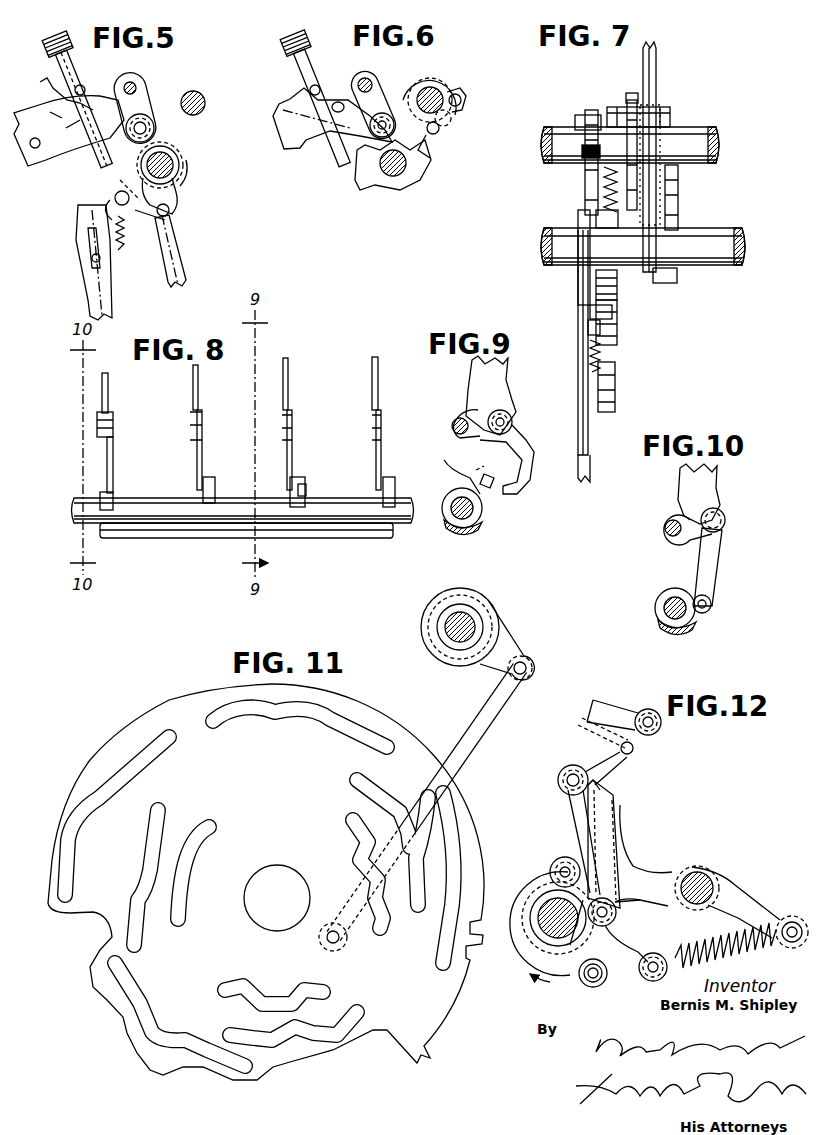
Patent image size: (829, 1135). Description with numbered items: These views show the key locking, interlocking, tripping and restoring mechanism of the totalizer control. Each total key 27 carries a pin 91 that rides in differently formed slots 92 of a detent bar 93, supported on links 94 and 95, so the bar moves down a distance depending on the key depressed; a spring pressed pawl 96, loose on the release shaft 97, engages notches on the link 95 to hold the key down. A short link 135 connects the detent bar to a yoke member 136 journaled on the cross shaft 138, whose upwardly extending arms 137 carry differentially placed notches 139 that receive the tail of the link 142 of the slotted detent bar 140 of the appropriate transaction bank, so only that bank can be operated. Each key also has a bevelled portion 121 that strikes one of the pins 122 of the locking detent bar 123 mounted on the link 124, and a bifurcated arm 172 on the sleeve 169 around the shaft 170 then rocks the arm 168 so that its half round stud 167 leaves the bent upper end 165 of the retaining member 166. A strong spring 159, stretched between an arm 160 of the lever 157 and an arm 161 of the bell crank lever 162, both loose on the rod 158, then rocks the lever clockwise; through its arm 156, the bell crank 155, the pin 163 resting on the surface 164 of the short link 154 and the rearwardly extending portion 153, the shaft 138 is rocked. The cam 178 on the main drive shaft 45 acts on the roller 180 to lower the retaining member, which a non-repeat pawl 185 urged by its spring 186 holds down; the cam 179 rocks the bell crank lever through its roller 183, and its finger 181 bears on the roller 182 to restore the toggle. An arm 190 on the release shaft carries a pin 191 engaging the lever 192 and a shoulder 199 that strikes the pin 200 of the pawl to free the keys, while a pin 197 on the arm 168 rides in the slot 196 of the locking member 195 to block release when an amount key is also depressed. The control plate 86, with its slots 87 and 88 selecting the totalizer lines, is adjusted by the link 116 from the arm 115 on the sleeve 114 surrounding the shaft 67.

In FIG. 5, the total key 27 is at (50, 50).
In FIG. 6, the total key 27 is at (286, 52).
In FIG. 7, the total key 27 is at (656, 92).
In FIG. 12, the main drive shaft 45 is at (548, 912).
In FIG. 11, the shaft 67 is at (472, 624).
In FIG. 11, the control plate 86 is at (450, 1010).
In FIG. 11, the slots 87 is at (226, 828).
In FIG. 11, the slots 88 is at (160, 812).
In FIG. 5, the pin 91 is at (85, 88).
In FIG. 6, the pin 91 is at (317, 85).
In FIG. 6, the slots 92 is at (340, 102).
In FIG. 6, the detent bar 93 is at (300, 146).
In FIG. 8, the detent bar 93 is at (108, 392).
In FIG. 10, the detent bar 93 is at (705, 490).
In FIG. 8, the link 94 is at (97, 436).
In FIG. 10, the link 94 is at (662, 528).
In FIG. 6, the link 95 is at (385, 96).
In FIG. 7, the link 95 is at (632, 100).
In FIG. 6, the spring pressed pawl 96 is at (461, 100).
In FIG. 7, the spring pressed pawl 96 is at (628, 110).
In FIG. 5, the release shaft 97 is at (205, 103).
In FIG. 6, the release shaft 97 is at (436, 92).
In FIG. 7, the release shaft 97 is at (700, 140).
In FIG. 11, the sleeve 114 is at (484, 626).
In FIG. 11, the arm 115 is at (500, 656).
In FIG. 11, the link 116 is at (480, 734).
In FIG. 5, the bevelled portion 121 is at (46, 84).
In FIG. 5, the pins 122 is at (36, 148).
In FIG. 5, the locking detent bar 123 is at (46, 126).
In FIG. 5, the link 124 is at (138, 100).
In FIG. 7, the link 124 is at (664, 118).
In FIG. 8, the short link 135 is at (113, 458).
In FIG. 10, the short link 135 is at (714, 556).
In FIG. 8, the yoke member 136 is at (148, 540).
In FIG. 9, the yoke member 136 is at (486, 530).
In FIG. 10, the yoke member 136 is at (694, 628).
In FIG. 8, the arm 137 is at (212, 480).
In FIG. 9, the arm 137 is at (450, 468).
In FIG. 8, the cross shaft 138 is at (128, 500).
In FIG. 9, the cross shaft 138 is at (474, 508).
In FIG. 10, the cross shaft 138 is at (664, 608).
In FIG. 8, the notches 139 is at (306, 488).
In FIG. 9, the notches 139 is at (488, 476).
In FIG. 8, the slotted detent bar 140 is at (198, 396).
In FIG. 9, the slotted detent bar 140 is at (482, 392).
In FIG. 8, the link 142 is at (202, 448).
In FIG. 9, the link 142 is at (512, 444).
In FIG. 12, the rearwardly extending portion 153 is at (615, 710).
In FIG. 12, the short link 154 is at (602, 728).
In FIG. 12, the bell crank 155 is at (577, 817).
In FIG. 12, the arm 156 is at (648, 975).
In FIG. 12, the lever 157 is at (698, 875).
In FIG. 12, the rod 158 is at (717, 877).
In FIG. 12, the strong spring 159 is at (758, 952).
In FIG. 12, the arm 160 is at (743, 915).
In FIG. 12, the arm 161 is at (673, 948).
In FIG. 12, the bell crank lever 162 is at (642, 878).
In FIG. 12, the pin 163 is at (633, 748).
In FIG. 12, the surface 164 is at (657, 740).
In FIG. 7, the bent upper end 165 is at (590, 328).
In FIG. 5, the retaining member 166 is at (175, 266).
In FIG. 7, the retaining member 166 is at (586, 446).
In FIG. 12, the retaining member 166 is at (608, 825).
In FIG. 5, the half round stud 167 is at (170, 211).
In FIG. 7, the half round stud 167 is at (592, 312).
In FIG. 5, the arm 168 is at (160, 196).
In FIG. 7, the arm 168 is at (615, 324).
In FIG. 7, the sleeve 169 is at (660, 284).
In FIG. 5, the shaft 170 is at (173, 162).
In FIG. 6, the shaft 170 is at (402, 176).
In FIG. 7, the shaft 170 is at (716, 246).
In FIG. 5, the arm 172 is at (152, 132).
In FIG. 7, the arm 172 is at (679, 212).
In FIG. 12, the cam 178 is at (522, 970).
In FIG. 12, the cam 179 is at (618, 922).
In FIG. 12, the roller 180 is at (583, 980).
In FIG. 12, the finger 181 is at (603, 792).
In FIG. 12, the roller 182 is at (558, 772).
In FIG. 12, the roller 183 is at (563, 858).
In FIG. 5, the non-repeat pawl 185 is at (126, 194).
In FIG. 7, the non-repeat pawl 185 is at (612, 291).
In FIG. 5, the spring 186 is at (110, 218).
In FIG. 7, the spring 186 is at (589, 358).
In FIG. 6, the arm 190 is at (436, 80).
In FIG. 7, the arm 190 is at (591, 112).
In FIG. 6, the pin 191 is at (440, 132).
In FIG. 6, the lever 192 is at (416, 170).
In FIG. 7, the lever 192 is at (580, 272).
In FIG. 5, the locking member 195 is at (100, 302).
In FIG. 7, the locking member 195 is at (586, 474).
In FIG. 5, the slot 196 is at (90, 240).
In FIG. 5, the pin 197 is at (92, 258).
In FIG. 7, the pin 197 is at (608, 396).
In FIG. 6, the shoulder 199 is at (451, 118).
In FIG. 7, the shoulder 199 is at (584, 152).
In FIG. 6, the pin 200 is at (460, 92).
In FIG. 7, the pin 200 is at (578, 128).